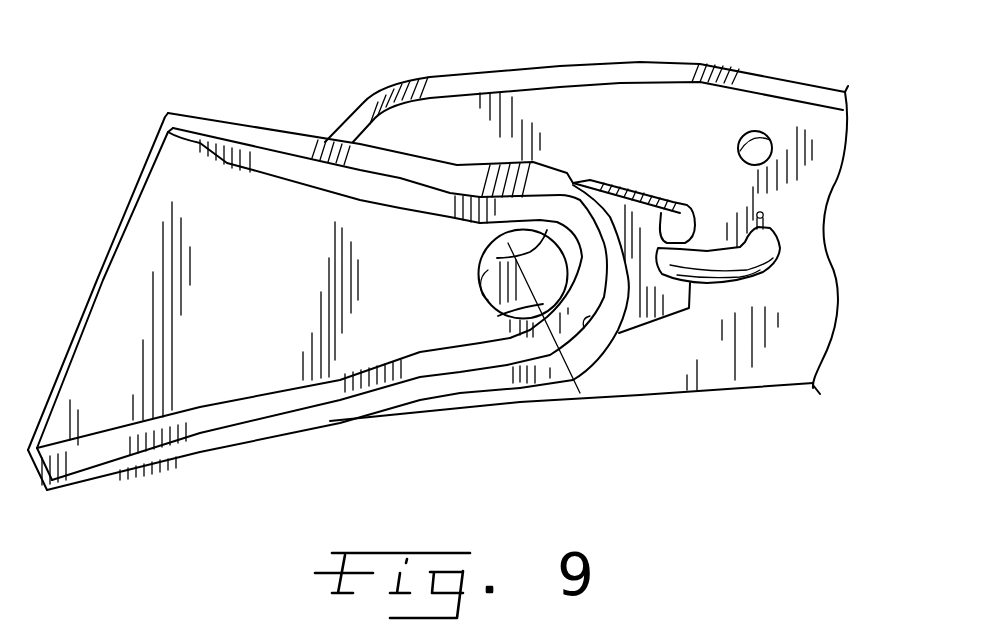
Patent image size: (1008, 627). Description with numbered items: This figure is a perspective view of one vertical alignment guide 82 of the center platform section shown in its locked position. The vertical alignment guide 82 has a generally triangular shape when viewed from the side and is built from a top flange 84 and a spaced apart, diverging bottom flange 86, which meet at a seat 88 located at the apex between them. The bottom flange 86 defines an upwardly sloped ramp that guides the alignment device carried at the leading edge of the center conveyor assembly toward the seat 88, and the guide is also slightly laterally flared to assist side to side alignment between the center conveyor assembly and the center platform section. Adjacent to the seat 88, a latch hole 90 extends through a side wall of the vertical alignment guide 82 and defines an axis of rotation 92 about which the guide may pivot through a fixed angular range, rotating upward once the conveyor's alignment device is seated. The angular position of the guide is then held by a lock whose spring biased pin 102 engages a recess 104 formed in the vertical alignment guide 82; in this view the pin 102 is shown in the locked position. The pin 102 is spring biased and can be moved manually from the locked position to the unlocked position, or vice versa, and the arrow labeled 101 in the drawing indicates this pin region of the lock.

The vertical alignment guide 82 is at (266, 128).
The top flange 84 is at (397, 170).
The bottom flange 86 is at (220, 440).
The seat 88 is at (582, 336).
The latch hole 90 is at (480, 270).
The axis of rotation 92 is at (505, 310).
The locking pin 101 is at (688, 170).
The spring biased pin 102 is at (766, 257).
The recess 104 is at (670, 227).